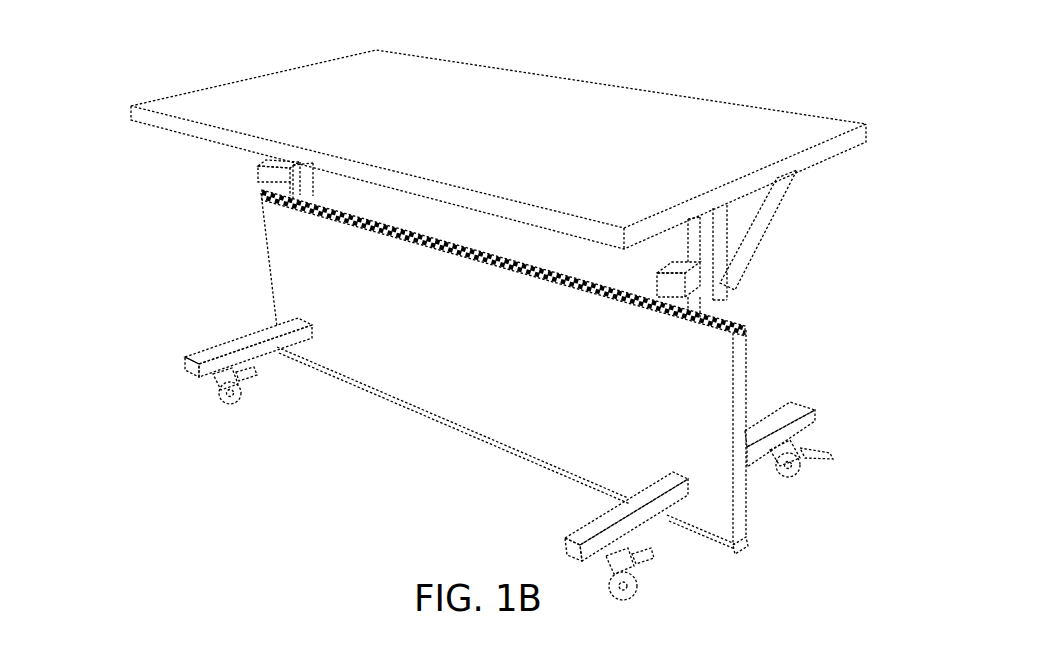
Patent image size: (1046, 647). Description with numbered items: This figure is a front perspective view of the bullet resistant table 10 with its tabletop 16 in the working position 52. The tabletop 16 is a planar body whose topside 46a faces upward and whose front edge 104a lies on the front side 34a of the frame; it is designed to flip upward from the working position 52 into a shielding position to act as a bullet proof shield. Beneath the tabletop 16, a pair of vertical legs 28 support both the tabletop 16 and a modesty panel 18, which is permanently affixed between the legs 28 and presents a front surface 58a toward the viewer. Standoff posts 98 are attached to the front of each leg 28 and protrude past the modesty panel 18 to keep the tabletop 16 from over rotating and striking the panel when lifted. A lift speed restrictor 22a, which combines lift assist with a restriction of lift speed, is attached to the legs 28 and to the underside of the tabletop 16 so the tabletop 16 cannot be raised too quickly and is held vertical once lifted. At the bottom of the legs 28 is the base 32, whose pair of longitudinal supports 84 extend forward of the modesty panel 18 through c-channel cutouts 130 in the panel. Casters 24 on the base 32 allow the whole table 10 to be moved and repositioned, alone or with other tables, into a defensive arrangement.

The table 10 is at (836, 57).
The tabletop 16 is at (551, 125).
The modesty panel 18 is at (390, 331).
The lift speed restrictor 22a is at (772, 198).
The casters 24 is at (693, 6).
The vertical legs 28 is at (297, 185).
The base 32 is at (835, 410).
The front side of the frame 34a is at (341, 464).
The topside of the tabletop 46a is at (306, 88).
The working position 52 is at (897, 103).
The front surface of the modesty panel 58a is at (500, 357).
The longitudinal supports 84 is at (792, 417).
The standoff posts 98 is at (268, 169).
The front edge of the tabletop 104a is at (183, 127).
The c-channel cutouts 130 is at (687, 512).